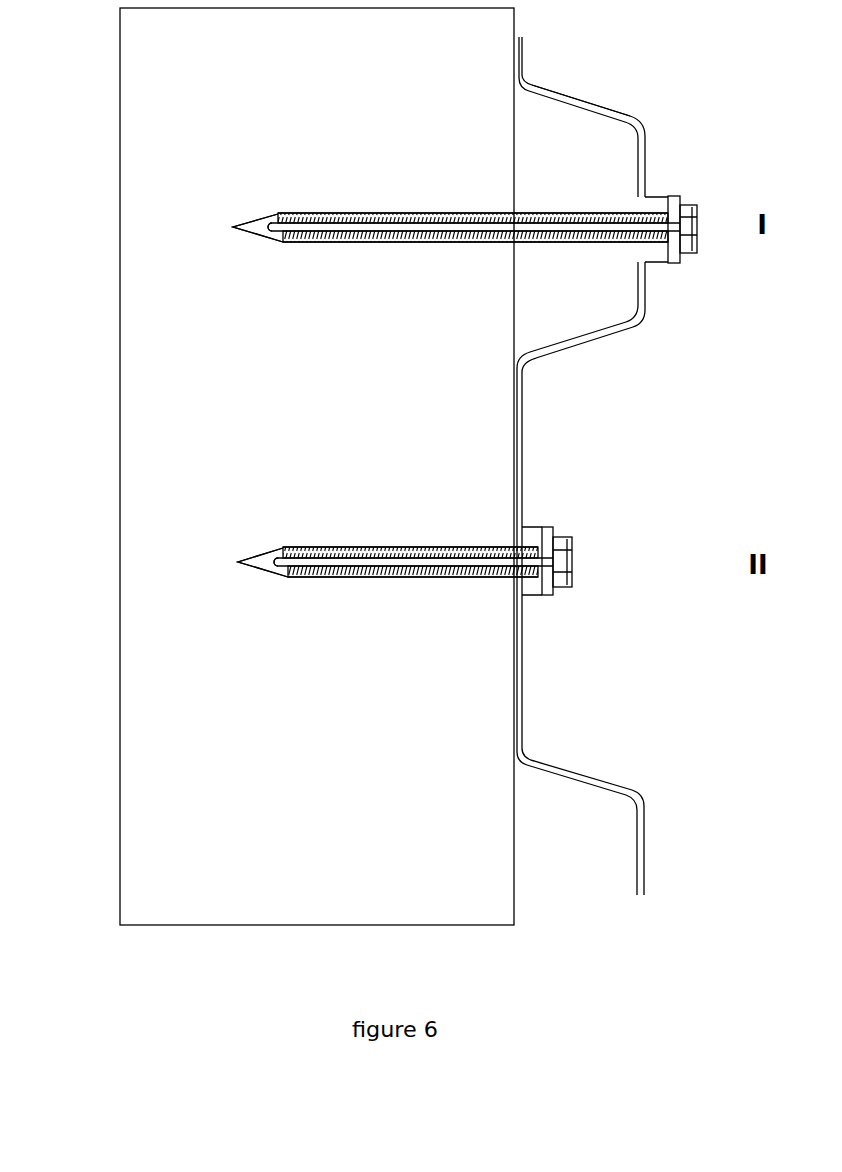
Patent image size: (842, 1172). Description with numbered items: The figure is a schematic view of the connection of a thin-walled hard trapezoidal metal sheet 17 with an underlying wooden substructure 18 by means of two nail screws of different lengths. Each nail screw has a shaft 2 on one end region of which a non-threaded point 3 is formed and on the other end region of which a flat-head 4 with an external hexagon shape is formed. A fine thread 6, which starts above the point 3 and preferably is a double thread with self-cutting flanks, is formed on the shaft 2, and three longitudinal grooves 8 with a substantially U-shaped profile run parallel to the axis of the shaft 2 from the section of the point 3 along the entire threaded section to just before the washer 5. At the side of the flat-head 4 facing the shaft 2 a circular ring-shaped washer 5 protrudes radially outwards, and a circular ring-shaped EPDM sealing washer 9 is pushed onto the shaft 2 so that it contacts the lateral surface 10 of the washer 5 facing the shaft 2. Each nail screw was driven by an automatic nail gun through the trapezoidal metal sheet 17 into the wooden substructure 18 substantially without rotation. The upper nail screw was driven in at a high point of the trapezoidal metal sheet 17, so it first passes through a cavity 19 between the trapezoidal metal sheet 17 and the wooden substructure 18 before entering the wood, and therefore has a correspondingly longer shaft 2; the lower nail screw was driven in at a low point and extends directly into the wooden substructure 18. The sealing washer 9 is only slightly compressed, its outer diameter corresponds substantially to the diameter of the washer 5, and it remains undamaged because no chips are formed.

The shaft 2 is at (339, 256).
The point 3 is at (261, 215).
The flat-head 4 is at (693, 203).
The washer 5 is at (678, 202).
The fine thread 6 is at (440, 242).
The longitudinal grooves 8 is at (394, 223).
The sealing washer 9 is at (660, 258).
The lateral surface 10 is at (671, 197).
The trapezoidal metal sheet 17 is at (553, 100).
The wooden substructure 18 is at (170, 99).
The cavity 19 is at (598, 163).